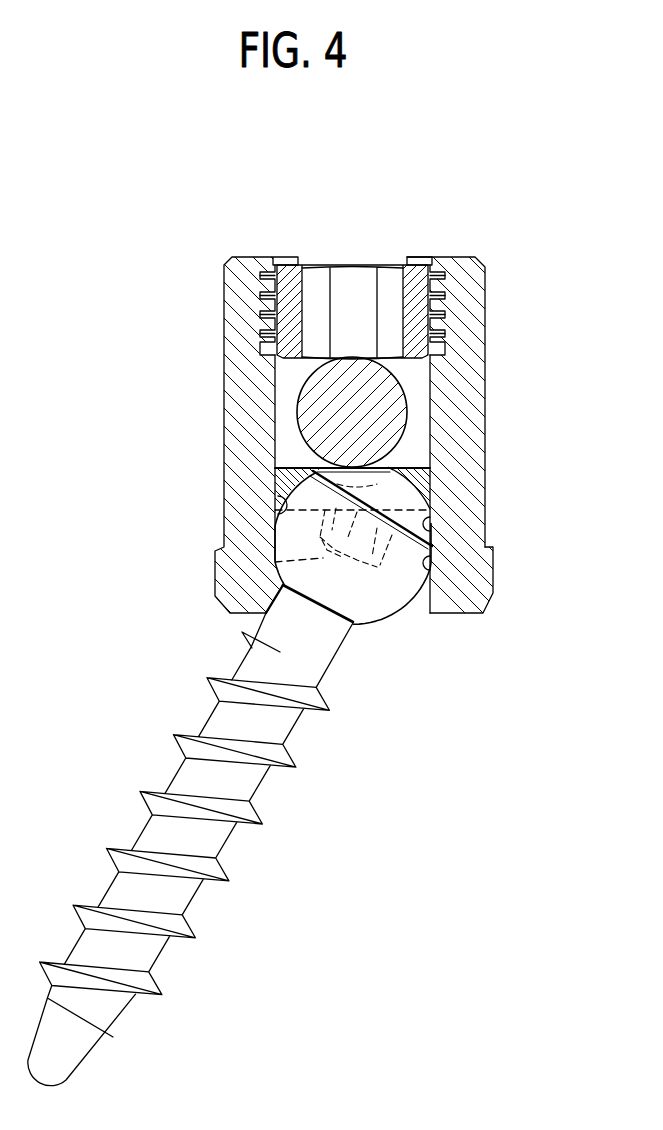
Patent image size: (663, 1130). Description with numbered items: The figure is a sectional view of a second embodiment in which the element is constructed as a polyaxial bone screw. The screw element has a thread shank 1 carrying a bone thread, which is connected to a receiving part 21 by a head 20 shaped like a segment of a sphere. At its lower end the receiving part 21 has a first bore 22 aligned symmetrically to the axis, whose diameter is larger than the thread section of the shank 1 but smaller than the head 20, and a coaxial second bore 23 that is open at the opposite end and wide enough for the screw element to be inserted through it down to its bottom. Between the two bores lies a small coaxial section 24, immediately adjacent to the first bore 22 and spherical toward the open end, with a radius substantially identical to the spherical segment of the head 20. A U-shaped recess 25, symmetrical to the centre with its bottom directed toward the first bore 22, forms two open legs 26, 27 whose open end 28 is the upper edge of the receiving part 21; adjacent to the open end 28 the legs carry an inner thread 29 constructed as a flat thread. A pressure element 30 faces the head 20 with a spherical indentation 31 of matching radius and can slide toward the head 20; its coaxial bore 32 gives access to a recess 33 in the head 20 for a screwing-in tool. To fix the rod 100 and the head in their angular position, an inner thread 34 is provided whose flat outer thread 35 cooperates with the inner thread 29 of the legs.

The thread shank 1 is at (217, 843).
The head 20 is at (304, 556).
The receiving part 21 is at (331, 394).
The first bore 22 is at (400, 598).
The second bore 23 is at (430, 525).
The small coaxial section 24 is at (487, 582).
The U-shaped recess 25 is at (352, 270).
The leg 26 is at (235, 278).
The leg 27 is at (473, 284).
The open end 28 is at (250, 257).
The inner thread 29 is at (440, 312).
The pressure element 30 is at (275, 468).
The spherical indentation 31 is at (283, 507).
The coaxial bore 32 is at (315, 471).
The recess 33 is at (292, 560).
The inner thread 34 is at (293, 262).
The outer thread 35 is at (443, 280).
The rod 100 is at (400, 410).